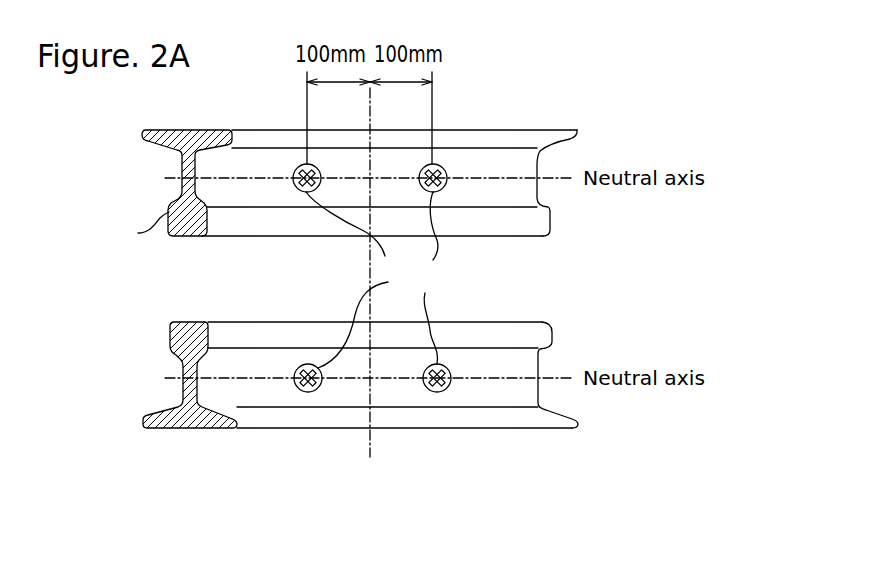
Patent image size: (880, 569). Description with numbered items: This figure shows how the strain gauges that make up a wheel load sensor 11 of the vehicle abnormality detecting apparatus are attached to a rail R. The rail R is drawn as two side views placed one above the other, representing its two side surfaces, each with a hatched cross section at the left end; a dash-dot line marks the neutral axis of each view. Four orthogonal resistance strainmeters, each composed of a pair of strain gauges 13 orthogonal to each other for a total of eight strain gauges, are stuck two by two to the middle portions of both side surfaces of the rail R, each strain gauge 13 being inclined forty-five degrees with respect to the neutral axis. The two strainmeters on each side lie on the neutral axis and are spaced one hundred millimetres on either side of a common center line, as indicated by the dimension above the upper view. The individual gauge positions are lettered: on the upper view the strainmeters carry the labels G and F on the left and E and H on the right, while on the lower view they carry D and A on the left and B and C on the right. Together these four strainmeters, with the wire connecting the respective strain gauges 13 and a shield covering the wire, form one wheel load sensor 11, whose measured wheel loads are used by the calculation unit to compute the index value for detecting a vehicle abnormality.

The wheel load sensor 11 is at (473, 122).
The strain gauge 13 is at (297, 187).
The rail R is at (172, 323).
The strain gauge element A is at (317, 385).
The strain gauge element B is at (435, 384).
The strain gauge element C is at (443, 384).
The strain gauge element D is at (310, 385).
The strain gauge element E is at (434, 170).
The strain gauge element F is at (313, 170).
The strain gauge element G is at (305, 170).
The strain gauge element H is at (442, 170).